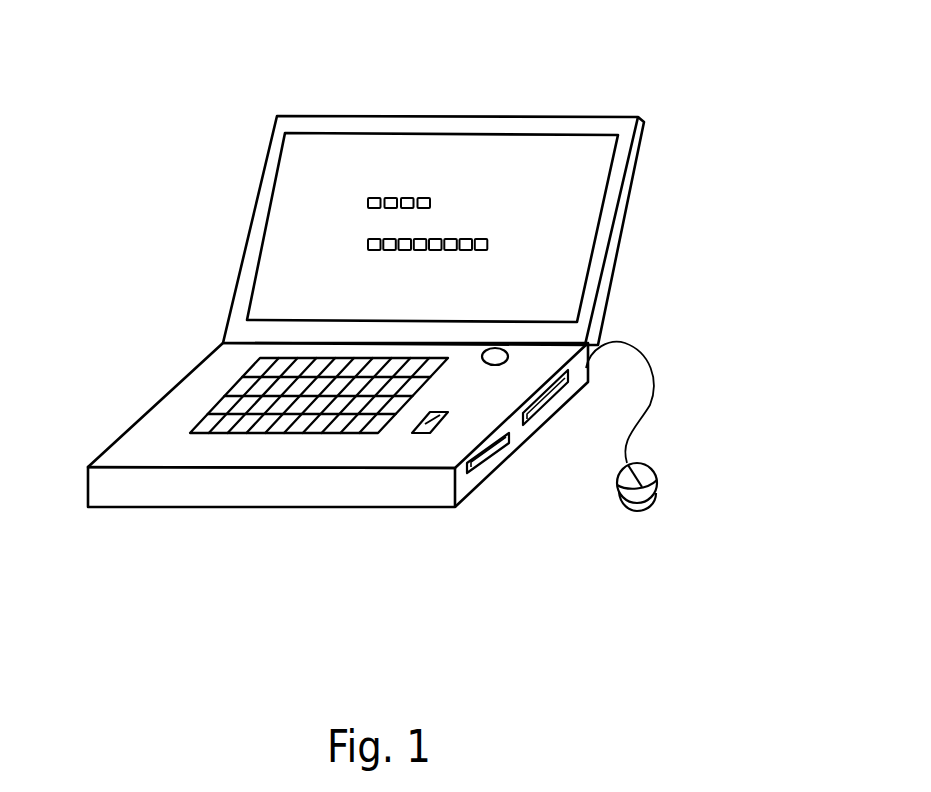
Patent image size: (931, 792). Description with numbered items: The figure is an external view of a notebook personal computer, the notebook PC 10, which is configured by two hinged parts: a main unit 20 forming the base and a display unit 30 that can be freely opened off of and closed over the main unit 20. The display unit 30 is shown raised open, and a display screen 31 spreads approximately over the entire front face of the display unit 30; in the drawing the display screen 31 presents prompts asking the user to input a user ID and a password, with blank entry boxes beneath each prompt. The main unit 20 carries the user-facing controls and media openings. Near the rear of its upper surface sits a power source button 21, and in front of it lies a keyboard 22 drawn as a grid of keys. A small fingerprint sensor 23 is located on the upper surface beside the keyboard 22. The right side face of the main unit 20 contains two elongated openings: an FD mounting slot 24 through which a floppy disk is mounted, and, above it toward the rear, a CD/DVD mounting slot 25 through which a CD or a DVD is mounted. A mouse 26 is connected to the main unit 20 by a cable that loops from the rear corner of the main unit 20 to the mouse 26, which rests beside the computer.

The notebook PC 10 is at (708, 68).
The main unit 20 is at (578, 374).
The power source button 21 is at (500, 356).
The keyboard 22 is at (234, 376).
The fingerprint sensor 23 is at (442, 420).
The FD mounting slot 24 is at (480, 458).
The CD/DVD mounting slot 25 is at (547, 395).
The mouse 26 is at (646, 461).
The display unit 30 is at (609, 125).
The display screen 31 is at (500, 147).